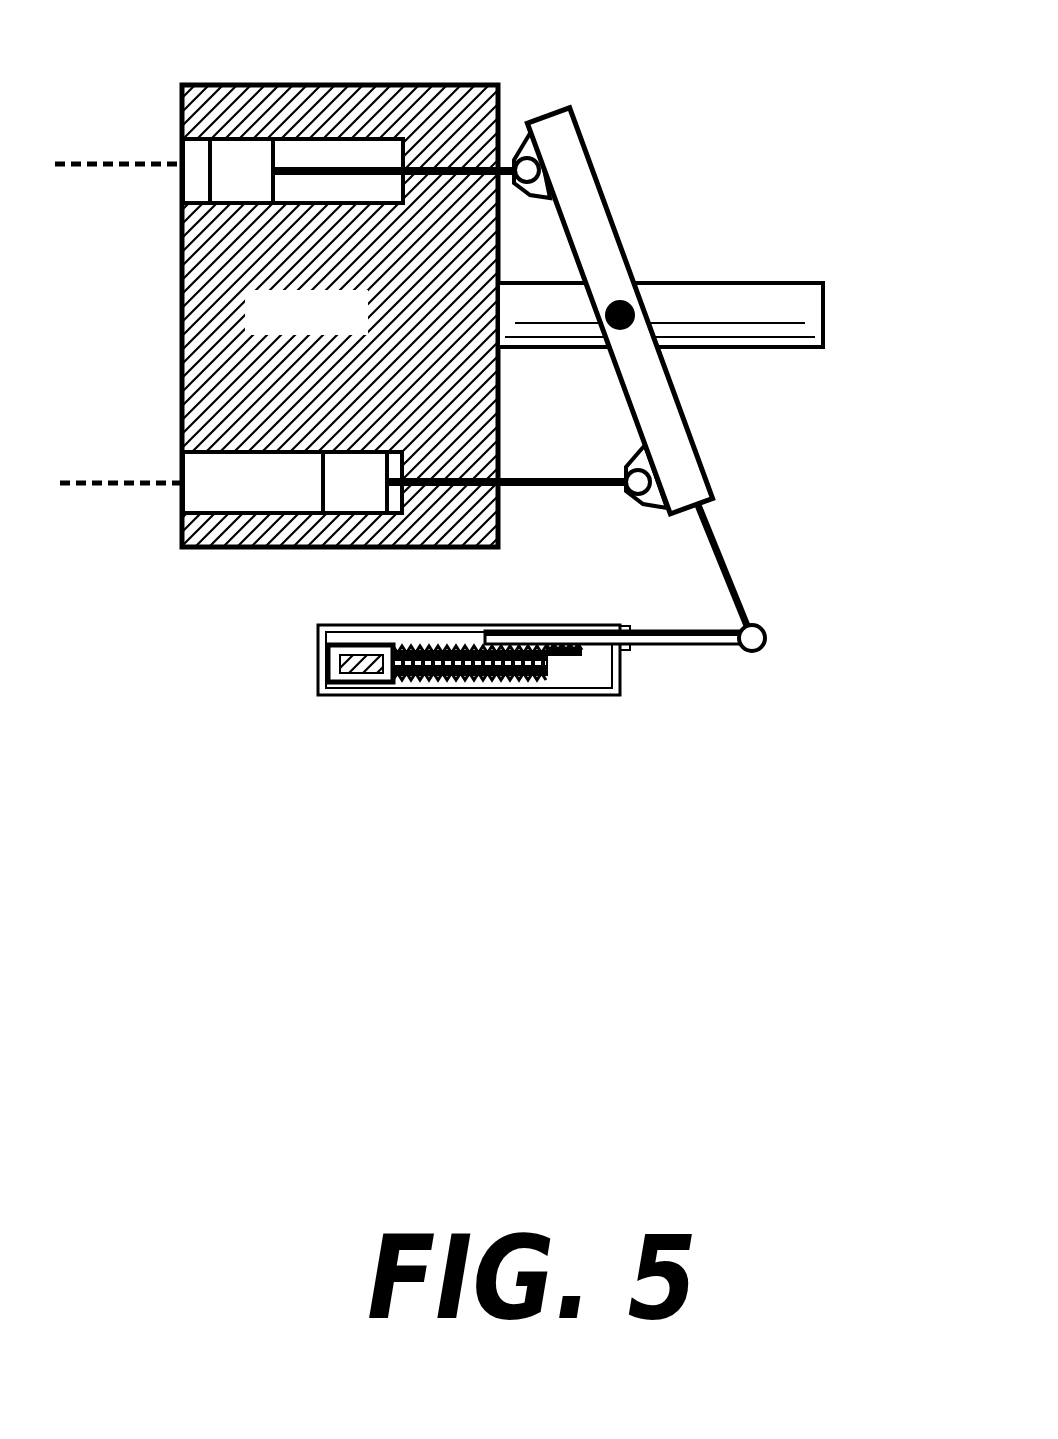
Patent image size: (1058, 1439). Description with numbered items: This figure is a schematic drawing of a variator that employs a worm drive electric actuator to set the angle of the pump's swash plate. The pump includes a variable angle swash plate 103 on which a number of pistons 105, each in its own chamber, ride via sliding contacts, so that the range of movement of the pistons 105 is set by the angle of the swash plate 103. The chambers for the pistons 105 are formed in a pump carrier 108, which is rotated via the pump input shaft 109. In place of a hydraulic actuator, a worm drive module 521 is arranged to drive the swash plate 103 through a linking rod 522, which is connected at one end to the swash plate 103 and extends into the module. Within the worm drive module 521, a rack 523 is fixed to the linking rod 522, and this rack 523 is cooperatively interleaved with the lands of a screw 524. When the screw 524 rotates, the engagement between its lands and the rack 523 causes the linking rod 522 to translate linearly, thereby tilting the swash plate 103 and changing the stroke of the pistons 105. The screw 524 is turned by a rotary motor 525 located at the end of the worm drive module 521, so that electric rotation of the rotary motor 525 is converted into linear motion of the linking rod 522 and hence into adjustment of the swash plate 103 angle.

The swash plate 103 is at (568, 152).
The pistons 105 is at (353, 463).
The pump carrier 108 is at (227, 550).
The pump input shaft 109 is at (770, 307).
The worm drive module 521 is at (492, 695).
The linking rod 522 is at (665, 648).
The rack 523 is at (578, 653).
The screw 524 is at (447, 673).
The rotary motor 525 is at (360, 676).